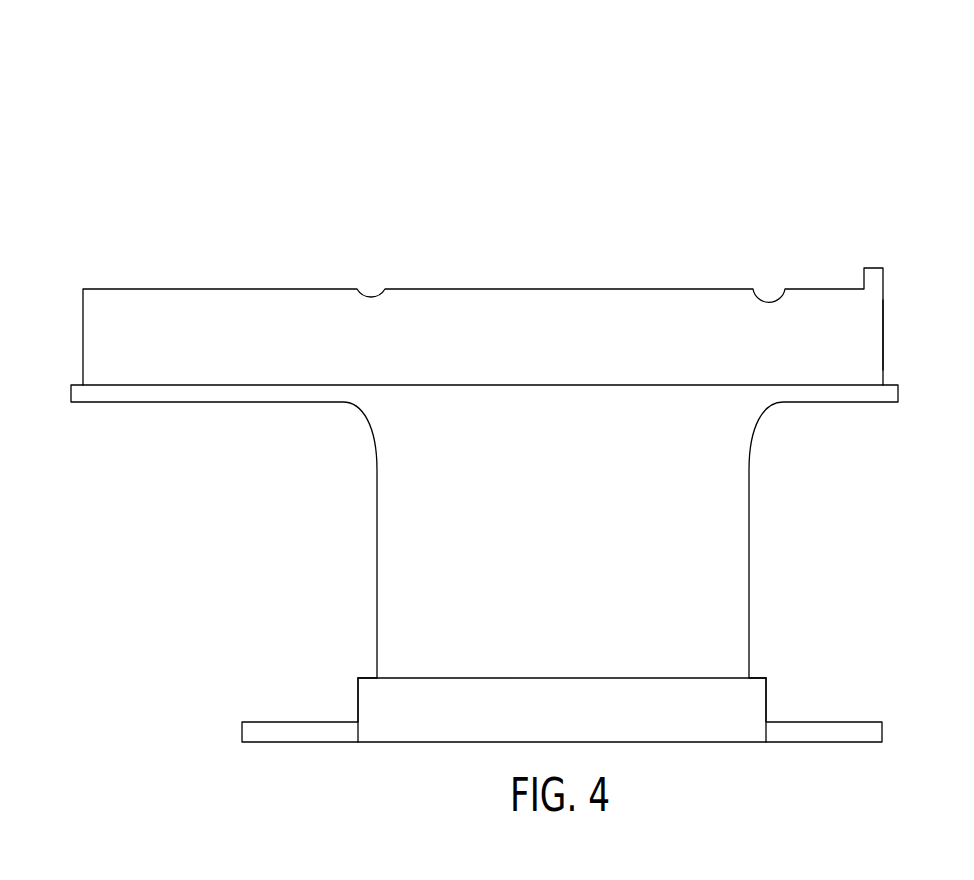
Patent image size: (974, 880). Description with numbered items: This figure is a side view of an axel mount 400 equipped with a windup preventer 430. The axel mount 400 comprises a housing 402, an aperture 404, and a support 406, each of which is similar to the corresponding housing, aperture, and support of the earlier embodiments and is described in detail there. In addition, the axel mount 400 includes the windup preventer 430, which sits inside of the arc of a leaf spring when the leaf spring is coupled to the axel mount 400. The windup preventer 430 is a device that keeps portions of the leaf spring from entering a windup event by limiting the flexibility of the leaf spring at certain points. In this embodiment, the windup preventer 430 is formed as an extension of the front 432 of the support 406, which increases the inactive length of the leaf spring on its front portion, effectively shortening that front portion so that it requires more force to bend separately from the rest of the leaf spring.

The axel mount 400 is at (809, 70).
The housing 402 is at (728, 595).
The aperture 404 is at (492, 563).
The support 406 is at (883, 333).
The windup preventer 430 is at (519, 291).
The front 432 is at (172, 360).